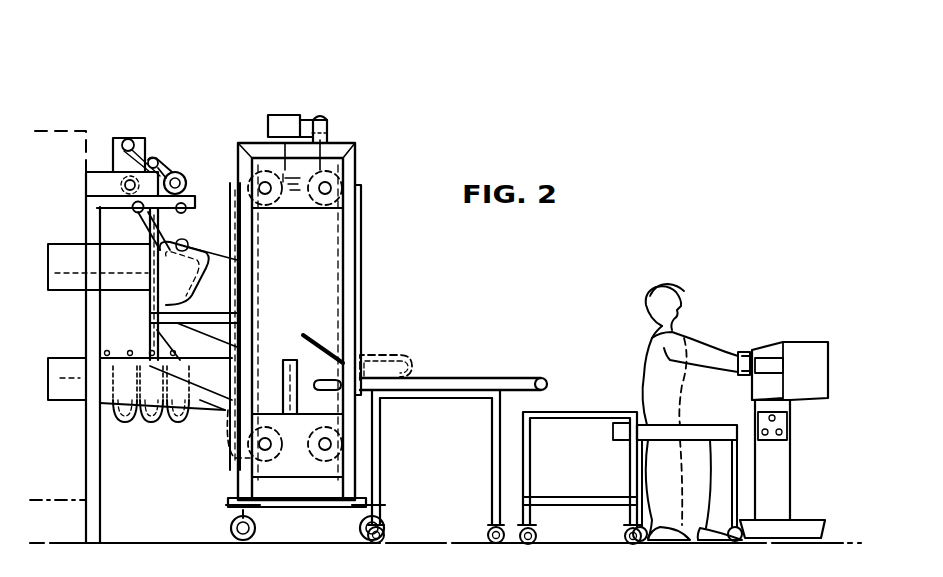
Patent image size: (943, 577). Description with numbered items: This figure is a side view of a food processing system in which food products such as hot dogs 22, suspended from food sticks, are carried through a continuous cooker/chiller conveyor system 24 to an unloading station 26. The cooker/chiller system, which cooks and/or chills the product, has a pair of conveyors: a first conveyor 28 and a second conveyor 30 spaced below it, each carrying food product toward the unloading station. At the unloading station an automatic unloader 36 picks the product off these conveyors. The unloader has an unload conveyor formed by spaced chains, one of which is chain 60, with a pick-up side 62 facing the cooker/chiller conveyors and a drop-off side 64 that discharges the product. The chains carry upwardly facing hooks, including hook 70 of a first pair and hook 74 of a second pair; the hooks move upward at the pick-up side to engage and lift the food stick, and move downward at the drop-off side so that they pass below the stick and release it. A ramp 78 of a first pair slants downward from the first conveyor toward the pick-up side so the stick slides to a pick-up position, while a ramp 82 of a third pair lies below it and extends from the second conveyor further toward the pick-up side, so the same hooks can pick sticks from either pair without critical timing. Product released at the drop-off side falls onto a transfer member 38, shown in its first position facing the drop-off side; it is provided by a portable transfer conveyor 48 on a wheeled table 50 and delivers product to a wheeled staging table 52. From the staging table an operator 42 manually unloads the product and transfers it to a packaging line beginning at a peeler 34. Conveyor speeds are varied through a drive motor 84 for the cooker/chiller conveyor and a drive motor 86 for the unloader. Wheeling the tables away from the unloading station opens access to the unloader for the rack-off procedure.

The hot dogs 22 is at (410, 356).
The continuous cooker/chiller conveyor system 24 is at (101, 140).
The unloading station 26 is at (472, 362).
The first conveyor 28 is at (172, 248).
The second conveyor 30 is at (148, 358).
The peeler 34 is at (765, 345).
The automatic unloader 36 is at (360, 157).
The transfer member 38 is at (516, 376).
The operator 42 is at (684, 288).
The portable transfer conveyor 48 is at (543, 383).
The wheeled table 50 is at (491, 441).
The wheeled staging table 52 is at (598, 412).
The chain 60 is at (266, 176).
The pick-up side 62 is at (237, 238).
The drop-off side 64 is at (362, 240).
The hook 70 is at (246, 362).
The hook 74 is at (308, 337).
The ramp 78 is at (233, 262).
The ramp 82 is at (218, 398).
The drive motor 84 is at (127, 138).
The drive motor 86 is at (291, 123).